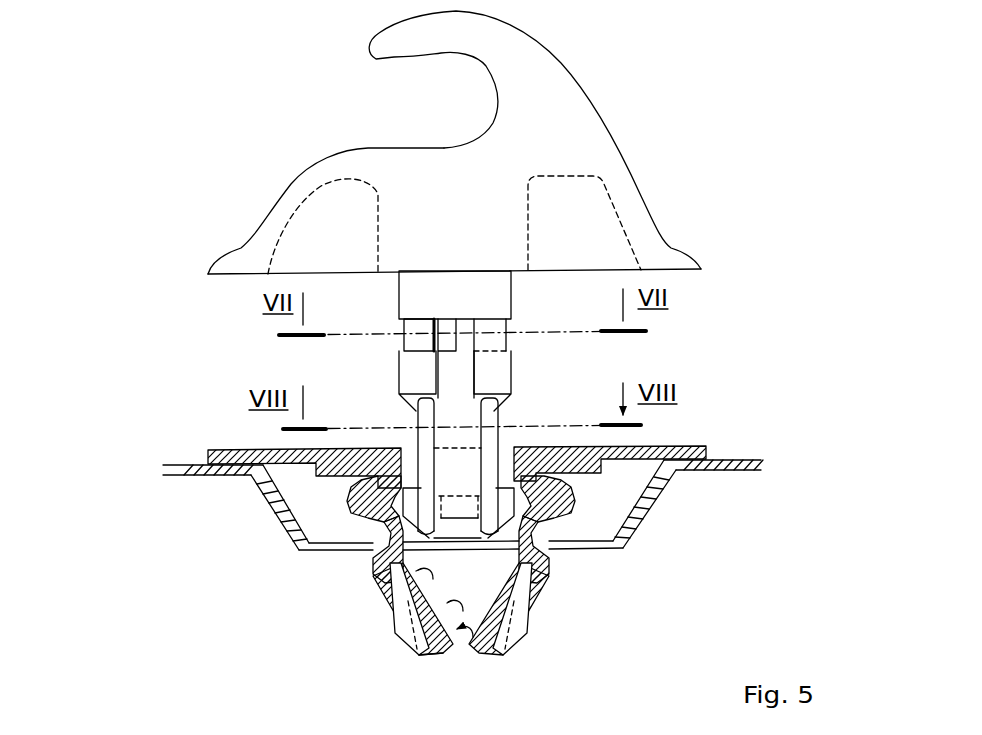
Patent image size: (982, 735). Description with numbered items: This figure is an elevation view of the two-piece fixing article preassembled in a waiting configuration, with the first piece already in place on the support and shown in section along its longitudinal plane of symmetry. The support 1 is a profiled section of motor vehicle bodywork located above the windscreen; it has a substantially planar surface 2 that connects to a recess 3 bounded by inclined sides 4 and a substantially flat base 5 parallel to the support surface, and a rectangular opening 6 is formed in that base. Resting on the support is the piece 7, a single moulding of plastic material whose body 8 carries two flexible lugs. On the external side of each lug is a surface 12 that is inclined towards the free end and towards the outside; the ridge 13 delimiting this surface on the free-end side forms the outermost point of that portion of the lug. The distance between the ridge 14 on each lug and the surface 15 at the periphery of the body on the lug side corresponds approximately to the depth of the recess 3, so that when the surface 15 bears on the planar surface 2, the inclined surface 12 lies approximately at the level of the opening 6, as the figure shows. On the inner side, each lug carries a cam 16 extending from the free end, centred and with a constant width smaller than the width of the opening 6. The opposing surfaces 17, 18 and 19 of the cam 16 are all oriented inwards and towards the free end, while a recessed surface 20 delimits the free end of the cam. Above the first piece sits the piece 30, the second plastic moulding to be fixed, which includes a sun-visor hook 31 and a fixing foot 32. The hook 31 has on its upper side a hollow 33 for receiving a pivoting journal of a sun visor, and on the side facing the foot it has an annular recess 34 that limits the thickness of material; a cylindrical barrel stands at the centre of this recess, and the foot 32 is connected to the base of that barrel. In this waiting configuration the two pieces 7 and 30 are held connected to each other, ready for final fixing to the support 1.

The support 1 is at (192, 470).
The substantially planar surface 2 is at (178, 461).
The recess 3 is at (300, 540).
The inclined sides 4 is at (270, 499).
The substantially flat base 5 is at (321, 550).
The rectangular opening 6 is at (378, 560).
The piece 7 is at (472, 445).
The body 8 is at (238, 448).
The surface 12 is at (597, 547).
The ridge 13 is at (368, 547).
The ridge 14 is at (366, 530).
The surface 15 is at (635, 465).
The cam 16 is at (425, 598).
The surface 17 is at (400, 577).
The surface 18 is at (412, 648).
The surface 19 is at (458, 632).
The surface 20 is at (489, 656).
The piece 30 is at (503, 274).
The sun-visor hook 31 is at (468, 221).
The fixing foot 32 is at (471, 310).
The hollow 33 is at (464, 108).
The annular recess 34 is at (587, 210).